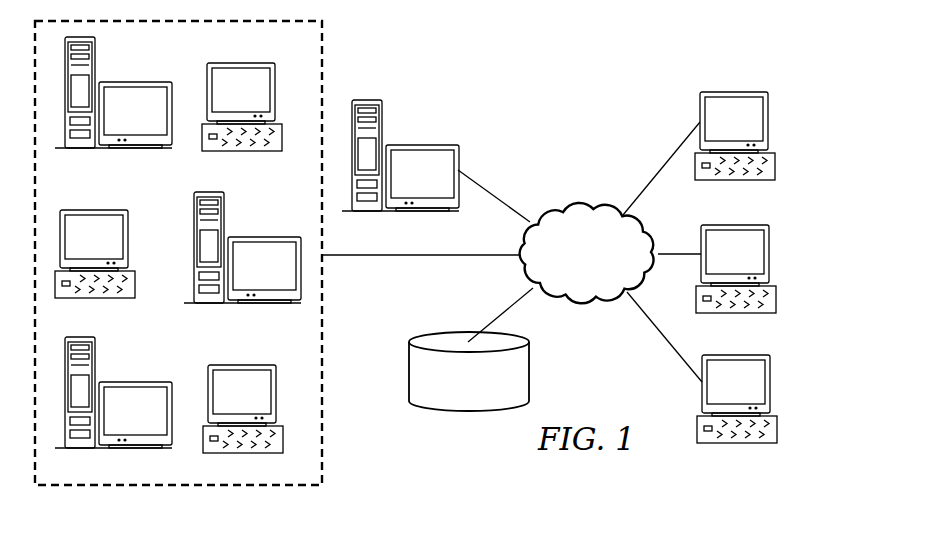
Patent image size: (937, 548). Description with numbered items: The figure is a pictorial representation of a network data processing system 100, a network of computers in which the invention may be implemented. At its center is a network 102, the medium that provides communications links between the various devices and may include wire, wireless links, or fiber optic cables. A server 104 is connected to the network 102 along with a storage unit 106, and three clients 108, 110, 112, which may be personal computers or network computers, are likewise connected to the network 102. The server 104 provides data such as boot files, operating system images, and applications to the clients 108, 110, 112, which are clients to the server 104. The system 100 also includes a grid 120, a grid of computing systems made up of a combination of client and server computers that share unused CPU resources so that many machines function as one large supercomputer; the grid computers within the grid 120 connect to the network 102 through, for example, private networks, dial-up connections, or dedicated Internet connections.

The network data processing system 100 is at (638, 98).
The network 102 is at (560, 207).
The server 104 is at (368, 99).
The storage unit 106 is at (409, 372).
The client 108 is at (771, 120).
The client 110 is at (772, 254).
The client 112 is at (773, 386).
The grid 120 is at (331, 428).